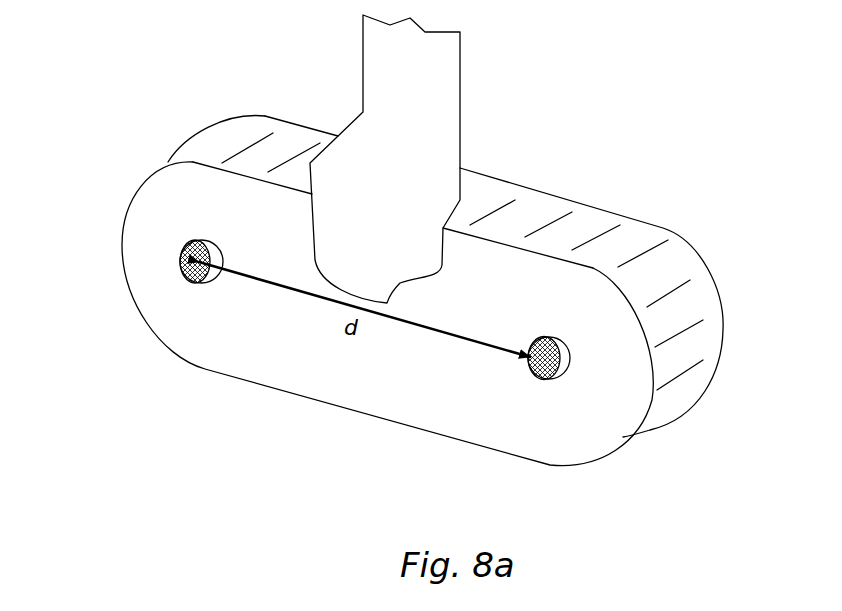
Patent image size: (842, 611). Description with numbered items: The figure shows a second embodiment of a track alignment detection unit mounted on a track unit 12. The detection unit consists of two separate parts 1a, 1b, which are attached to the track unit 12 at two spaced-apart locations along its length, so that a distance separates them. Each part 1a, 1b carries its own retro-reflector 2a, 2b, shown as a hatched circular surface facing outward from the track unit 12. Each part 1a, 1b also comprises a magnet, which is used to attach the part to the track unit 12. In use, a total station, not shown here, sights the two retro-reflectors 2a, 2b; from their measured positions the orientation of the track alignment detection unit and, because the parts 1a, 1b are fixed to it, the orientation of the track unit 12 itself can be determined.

The track unit 12 is at (662, 198).
The first part of the track alignment detection unit 1a is at (568, 388).
The second part of the track alignment detection unit 1b is at (172, 235).
The retro-reflector 2a is at (540, 373).
The retro-reflector 2b is at (188, 273).